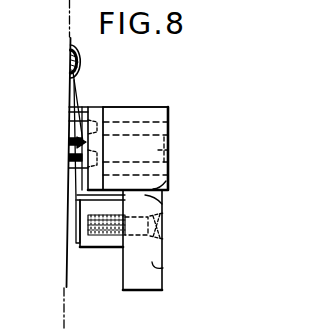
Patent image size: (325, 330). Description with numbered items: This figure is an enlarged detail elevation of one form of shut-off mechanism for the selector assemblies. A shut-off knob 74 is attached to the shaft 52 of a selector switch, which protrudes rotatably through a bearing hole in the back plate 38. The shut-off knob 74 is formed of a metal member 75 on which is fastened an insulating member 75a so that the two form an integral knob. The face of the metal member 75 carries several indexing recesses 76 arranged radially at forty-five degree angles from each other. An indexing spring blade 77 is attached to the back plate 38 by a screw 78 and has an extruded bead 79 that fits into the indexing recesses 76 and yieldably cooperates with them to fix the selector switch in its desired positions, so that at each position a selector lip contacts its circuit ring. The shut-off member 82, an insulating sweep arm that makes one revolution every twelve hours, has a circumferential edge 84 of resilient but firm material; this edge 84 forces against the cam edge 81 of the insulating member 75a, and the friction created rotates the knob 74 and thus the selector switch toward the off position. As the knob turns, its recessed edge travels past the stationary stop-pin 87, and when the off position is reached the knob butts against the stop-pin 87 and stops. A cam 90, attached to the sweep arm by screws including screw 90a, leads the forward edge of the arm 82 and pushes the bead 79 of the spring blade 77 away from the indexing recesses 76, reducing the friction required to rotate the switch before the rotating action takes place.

The back plate 38 is at (69, 182).
The shaft 52 is at (163, 150).
The shut-off knob 74 is at (170, 109).
The metal member 75 is at (102, 107).
The insulating member 75a is at (150, 108).
The indexing recesses 76 is at (69, 122).
The indexing spring blade 77 is at (77, 234).
The screw 78 is at (83, 60).
The extruded bead 79 is at (86, 142).
The cam edge 81 is at (158, 184).
The shut-off member 82 is at (160, 267).
The circumferential edge 84 is at (163, 212).
The stop-pin 87 is at (91, 64).
The cam 90 is at (91, 245).
The screw 90a is at (150, 236).